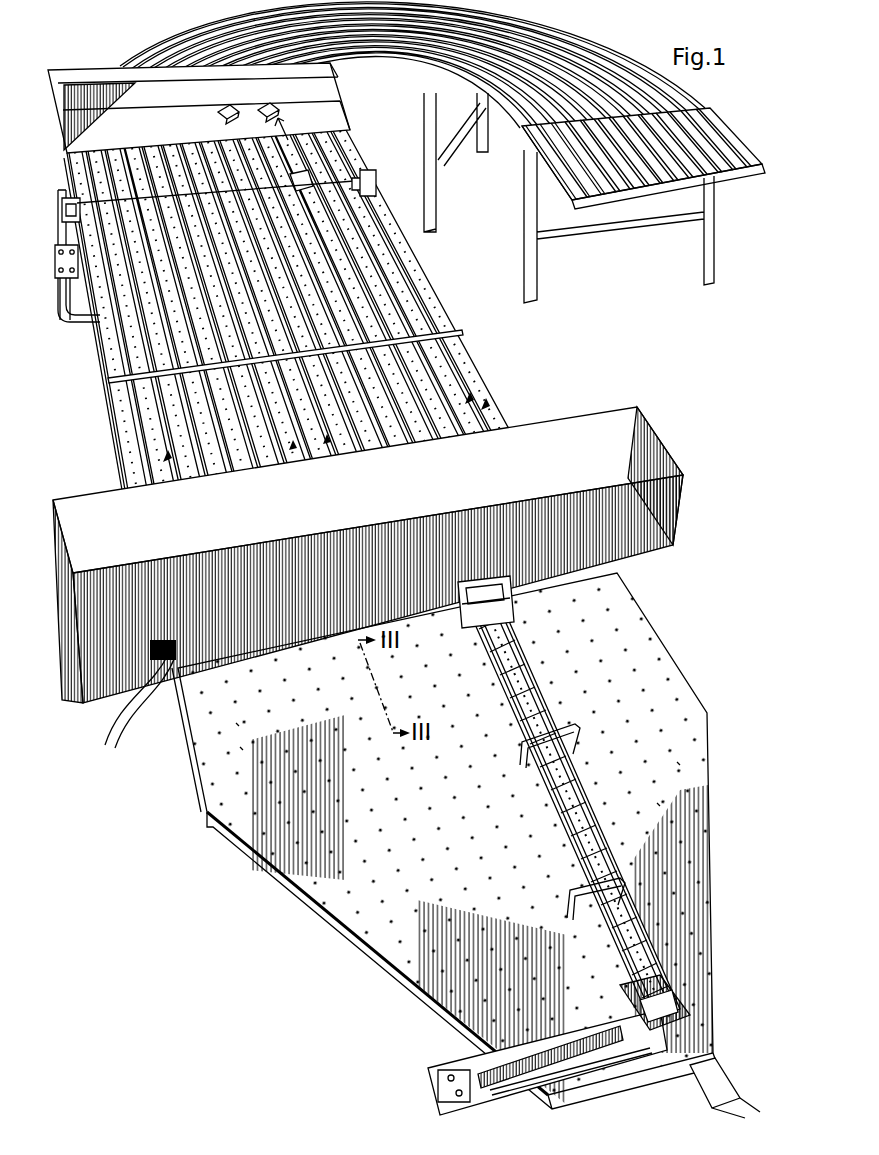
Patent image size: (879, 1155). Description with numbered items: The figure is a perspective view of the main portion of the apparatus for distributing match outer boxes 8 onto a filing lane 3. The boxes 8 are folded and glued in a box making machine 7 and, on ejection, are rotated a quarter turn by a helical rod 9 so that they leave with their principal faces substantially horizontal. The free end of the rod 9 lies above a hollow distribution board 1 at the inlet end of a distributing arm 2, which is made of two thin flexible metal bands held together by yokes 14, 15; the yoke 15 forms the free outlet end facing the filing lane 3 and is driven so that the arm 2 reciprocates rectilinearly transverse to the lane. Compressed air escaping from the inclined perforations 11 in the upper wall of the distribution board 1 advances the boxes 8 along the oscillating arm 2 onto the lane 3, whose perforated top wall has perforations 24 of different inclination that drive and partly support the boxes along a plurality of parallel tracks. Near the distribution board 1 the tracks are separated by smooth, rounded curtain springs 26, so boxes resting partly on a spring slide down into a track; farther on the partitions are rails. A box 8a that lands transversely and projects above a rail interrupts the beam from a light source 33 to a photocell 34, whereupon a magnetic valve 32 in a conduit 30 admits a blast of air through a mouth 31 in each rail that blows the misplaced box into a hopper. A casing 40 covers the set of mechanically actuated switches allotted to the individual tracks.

The distribution board 1 is at (367, 930).
The distributing arm 2 is at (520, 650).
The filing lane 3 is at (470, 340).
The machine 7 is at (417, 313).
The match outer boxes 8 is at (523, 703).
The incorrectly positioned box 8a is at (300, 178).
The rod 9 is at (683, 1077).
The perforations 11 is at (657, 803).
The yoke 14 is at (577, 733).
The yoke 15 is at (457, 608).
The perforations 24 is at (487, 413).
The curtain springs 26 is at (327, 437).
The conduit 30 is at (62, 190).
The mouth 31 is at (180, 180).
The valve 32 is at (57, 268).
The light source 33 is at (64, 215).
The photocell 34 is at (372, 178).
The casing 40 is at (215, 536).